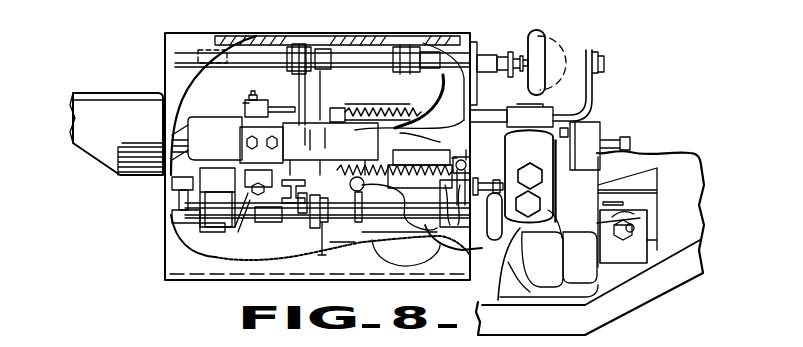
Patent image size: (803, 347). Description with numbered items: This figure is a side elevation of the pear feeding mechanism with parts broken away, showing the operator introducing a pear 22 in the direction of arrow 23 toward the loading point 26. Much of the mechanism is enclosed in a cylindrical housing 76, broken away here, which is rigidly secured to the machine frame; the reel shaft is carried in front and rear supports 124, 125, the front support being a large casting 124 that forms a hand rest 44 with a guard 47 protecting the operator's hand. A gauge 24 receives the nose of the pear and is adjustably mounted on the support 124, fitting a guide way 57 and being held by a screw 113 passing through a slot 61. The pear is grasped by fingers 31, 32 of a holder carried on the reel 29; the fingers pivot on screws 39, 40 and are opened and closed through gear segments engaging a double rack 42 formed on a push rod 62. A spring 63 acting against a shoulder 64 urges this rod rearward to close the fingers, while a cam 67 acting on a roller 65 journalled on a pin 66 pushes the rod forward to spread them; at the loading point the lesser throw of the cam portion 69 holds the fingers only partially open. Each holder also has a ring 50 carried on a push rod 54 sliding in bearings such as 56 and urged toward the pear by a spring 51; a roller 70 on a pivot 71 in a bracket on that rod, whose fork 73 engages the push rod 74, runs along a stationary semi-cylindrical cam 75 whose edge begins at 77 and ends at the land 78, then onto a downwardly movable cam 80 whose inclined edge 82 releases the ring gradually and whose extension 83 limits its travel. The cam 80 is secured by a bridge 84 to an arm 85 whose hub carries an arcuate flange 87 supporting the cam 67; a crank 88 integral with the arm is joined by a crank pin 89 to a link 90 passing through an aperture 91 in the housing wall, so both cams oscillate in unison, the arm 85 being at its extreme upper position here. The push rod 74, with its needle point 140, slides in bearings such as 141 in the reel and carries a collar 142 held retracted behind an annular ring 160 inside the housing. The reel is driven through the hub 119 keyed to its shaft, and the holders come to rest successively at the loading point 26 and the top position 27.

The pear 22 is at (540, 293).
The arrow 23 is at (540, 268).
The gauge 24 is at (630, 263).
The loading point 26 is at (628, 201).
The rest position 27 is at (611, 66).
The reel 29 is at (299, 90).
The finger 31 is at (590, 143).
The finger 32 is at (595, 52).
The screw 39 is at (534, 178).
The screw 40 is at (518, 192).
The double rack 42 is at (488, 112).
The hand rest 44 is at (580, 248).
The guard 47 is at (505, 290).
The ring 50 is at (545, 35).
The spring 51 is at (428, 168).
The push rod 54 is at (514, 54).
The bearing 56 is at (467, 164).
The guide way 57 is at (658, 186).
The slot 61 is at (636, 226).
The push rod 62 is at (352, 112).
The spring 63 is at (380, 112).
The shoulder 64 is at (338, 108).
The roller 65 is at (244, 106).
The pin 66 is at (253, 91).
The cam 67 is at (258, 196).
The cam portion 69 is at (245, 180).
The roller 70 is at (405, 45).
The pivot 71 is at (395, 221).
The fork 73 is at (428, 50).
The push rod 74 is at (370, 64).
The cam 75 is at (470, 250).
The cylindrical housing 76 is at (468, 268).
The cam edge beginning 77 is at (455, 203).
The land 78 is at (358, 243).
The cam 80 is at (420, 167).
The inclined edge 82 is at (420, 133).
The extension 83 is at (440, 80).
The bridge 84 is at (360, 148).
The arm 85 is at (226, 153).
The arcuate flange 87 is at (238, 220).
The crank 88 is at (200, 230).
The crank pin 89 is at (172, 218).
The link 90 is at (179, 200).
The aperture 91 is at (172, 184).
The screw 113 is at (636, 214).
The hub 119 is at (625, 137).
The support 124 is at (653, 288).
The rear support 125 is at (128, 129).
The needle point 140 is at (500, 55).
The bearing 141 is at (467, 45).
The collar 142 is at (300, 44).
The annular ring 160 is at (325, 48).